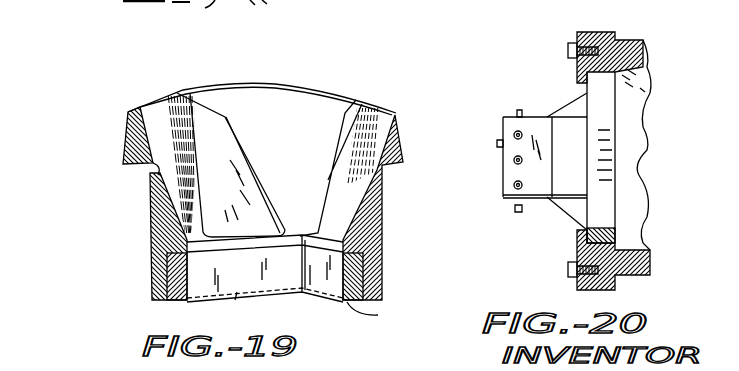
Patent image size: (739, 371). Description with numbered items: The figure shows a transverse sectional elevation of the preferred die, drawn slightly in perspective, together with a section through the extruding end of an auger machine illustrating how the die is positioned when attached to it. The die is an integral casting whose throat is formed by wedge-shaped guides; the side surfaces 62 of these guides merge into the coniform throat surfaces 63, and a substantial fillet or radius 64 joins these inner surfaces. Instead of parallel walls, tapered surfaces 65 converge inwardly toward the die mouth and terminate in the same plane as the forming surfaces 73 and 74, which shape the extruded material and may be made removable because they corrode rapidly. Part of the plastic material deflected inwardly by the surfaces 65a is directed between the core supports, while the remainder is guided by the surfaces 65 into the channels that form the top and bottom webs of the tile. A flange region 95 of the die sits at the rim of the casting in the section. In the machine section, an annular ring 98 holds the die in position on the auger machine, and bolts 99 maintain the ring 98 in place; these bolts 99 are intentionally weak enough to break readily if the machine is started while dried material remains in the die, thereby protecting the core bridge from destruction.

In FIG. 19, the side surfaces 62 is at (207, 120).
In FIG. 19, the coniform throat surfaces 63 is at (288, 138).
In FIG. 19, the fillet 64 is at (183, 140).
In FIG. 19, the tapered surfaces 65 is at (224, 170).
In FIG. 19, the surfaces 65a is at (342, 188).
In FIG. 19, the forming surface 73 is at (278, 283).
In FIG. 19, the forming surface 74 is at (313, 288).
In FIG. 19, the rim flange 95 is at (403, 150).
In FIG. 20, the annular ring 98 is at (577, 32).
In FIG. 20, the bolts 99 is at (568, 50).